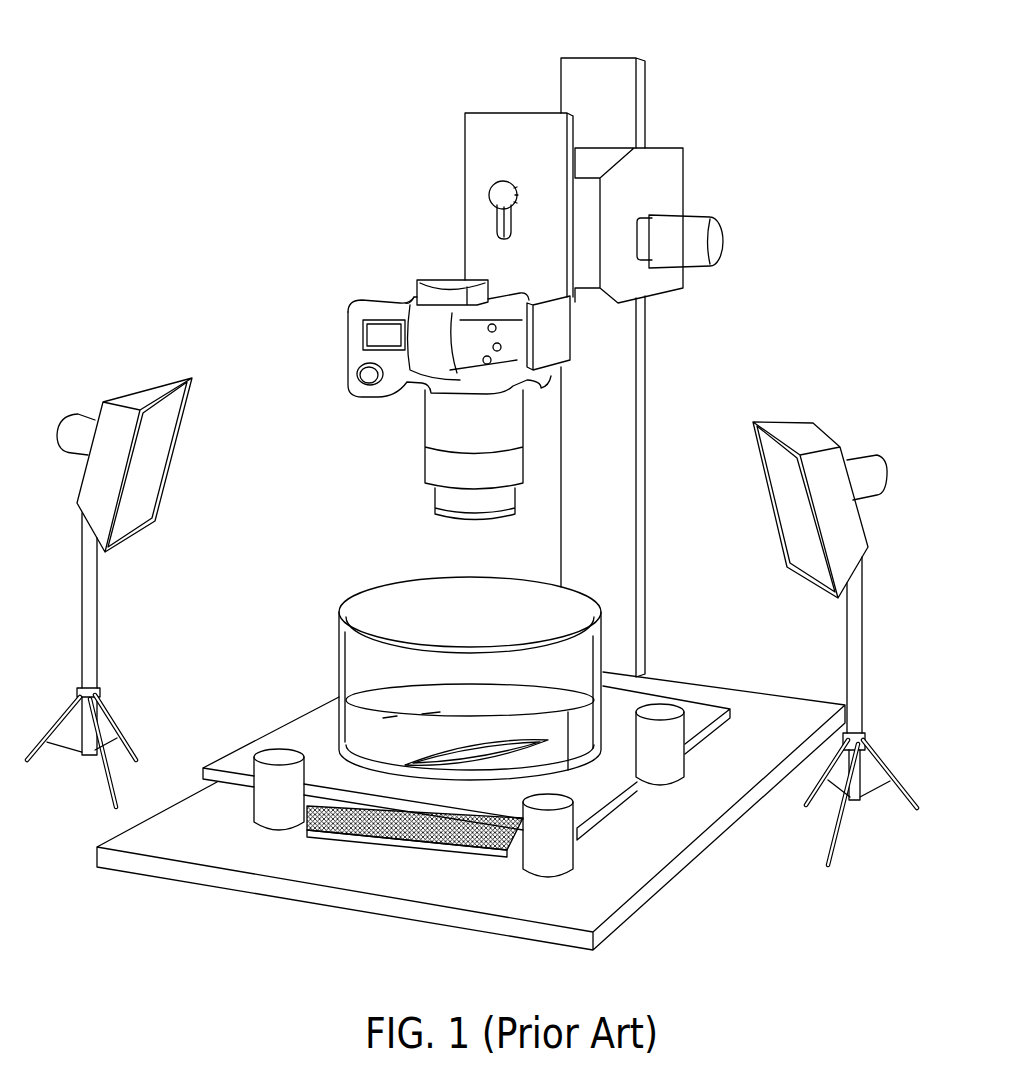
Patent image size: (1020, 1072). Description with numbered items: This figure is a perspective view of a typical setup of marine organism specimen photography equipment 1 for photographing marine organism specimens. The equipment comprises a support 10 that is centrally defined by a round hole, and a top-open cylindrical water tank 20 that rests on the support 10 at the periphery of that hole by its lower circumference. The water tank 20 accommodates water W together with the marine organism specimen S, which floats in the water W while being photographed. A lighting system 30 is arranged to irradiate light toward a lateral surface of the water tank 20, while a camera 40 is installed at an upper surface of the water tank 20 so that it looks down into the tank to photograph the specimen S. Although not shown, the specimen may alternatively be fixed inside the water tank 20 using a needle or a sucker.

The marine organism specimen photography equipment 1 is at (235, 178).
The support 10 is at (620, 797).
The water tank 20 is at (350, 649).
The lighting system 30 is at (162, 449).
The camera 40 is at (433, 437).
The water W is at (353, 748).
The marine organism specimen S is at (440, 768).